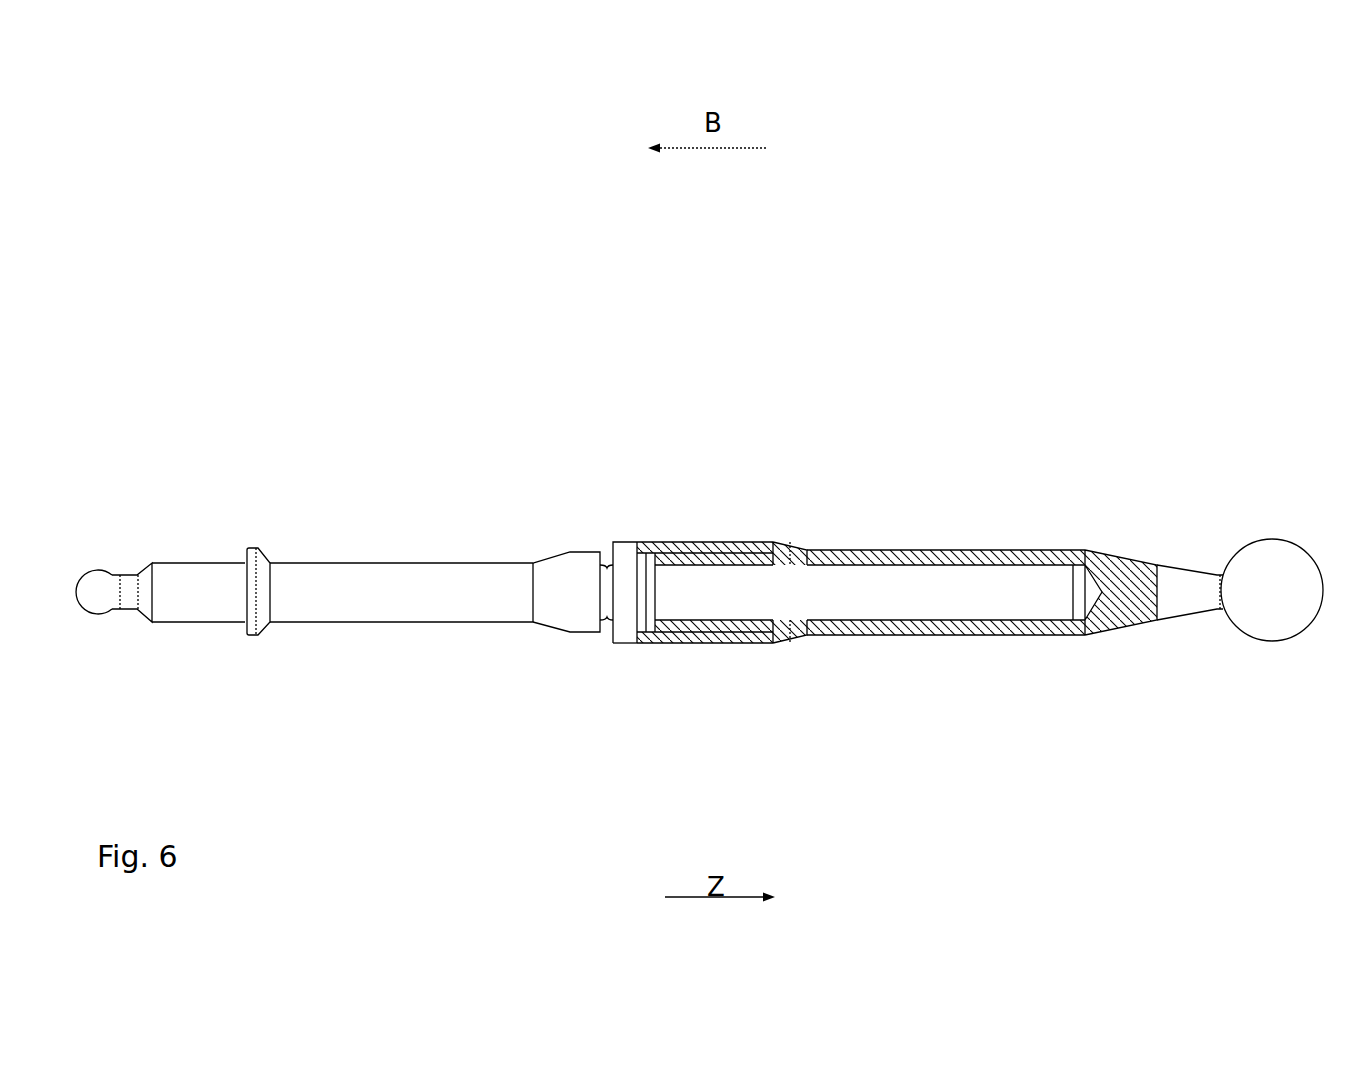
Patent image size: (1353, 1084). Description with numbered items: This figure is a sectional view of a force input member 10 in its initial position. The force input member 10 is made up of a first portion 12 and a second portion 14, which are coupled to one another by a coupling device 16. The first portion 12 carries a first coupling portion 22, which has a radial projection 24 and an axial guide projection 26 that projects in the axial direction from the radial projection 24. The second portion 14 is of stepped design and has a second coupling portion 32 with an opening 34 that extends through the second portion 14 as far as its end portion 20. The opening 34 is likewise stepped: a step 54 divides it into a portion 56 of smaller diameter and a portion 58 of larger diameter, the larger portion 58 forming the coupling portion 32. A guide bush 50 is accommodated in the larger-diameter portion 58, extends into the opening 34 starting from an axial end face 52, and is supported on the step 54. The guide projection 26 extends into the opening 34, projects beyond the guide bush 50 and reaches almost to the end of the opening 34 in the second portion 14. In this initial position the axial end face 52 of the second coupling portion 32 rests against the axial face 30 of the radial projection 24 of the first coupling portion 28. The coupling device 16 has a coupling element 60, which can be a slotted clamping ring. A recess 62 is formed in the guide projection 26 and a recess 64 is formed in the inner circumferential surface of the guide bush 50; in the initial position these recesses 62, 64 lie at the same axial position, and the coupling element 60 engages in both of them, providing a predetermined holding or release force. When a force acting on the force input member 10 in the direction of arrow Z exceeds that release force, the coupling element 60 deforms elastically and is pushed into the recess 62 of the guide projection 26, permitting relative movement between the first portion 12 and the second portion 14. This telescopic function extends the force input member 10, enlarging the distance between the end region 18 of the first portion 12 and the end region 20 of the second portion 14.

The force input member 10 is at (699, 440).
The first portion 12 is at (376, 491).
The second portion 14 is at (864, 586).
The coupling device 16 is at (587, 528).
The end region 18 is at (137, 496).
The end portion 20 is at (1240, 488).
The first coupling portion 22 is at (547, 539).
The radial projection 24 is at (614, 705).
The guide projection 26 is at (905, 676).
The first coupling portion 28 is at (556, 655).
The axial face 30 is at (652, 657).
The second coupling portion 32 is at (946, 690).
The opening 34 is at (946, 491).
The guide bush 50 is at (779, 532).
The axial end face 52 is at (672, 498).
The step 54 is at (717, 710).
The portion of smaller diameter 56 is at (946, 504).
The portion of larger diameter 58 is at (705, 504).
The coupling element 60 is at (636, 517).
The recess 62 is at (582, 527).
The recess 64 is at (714, 684).